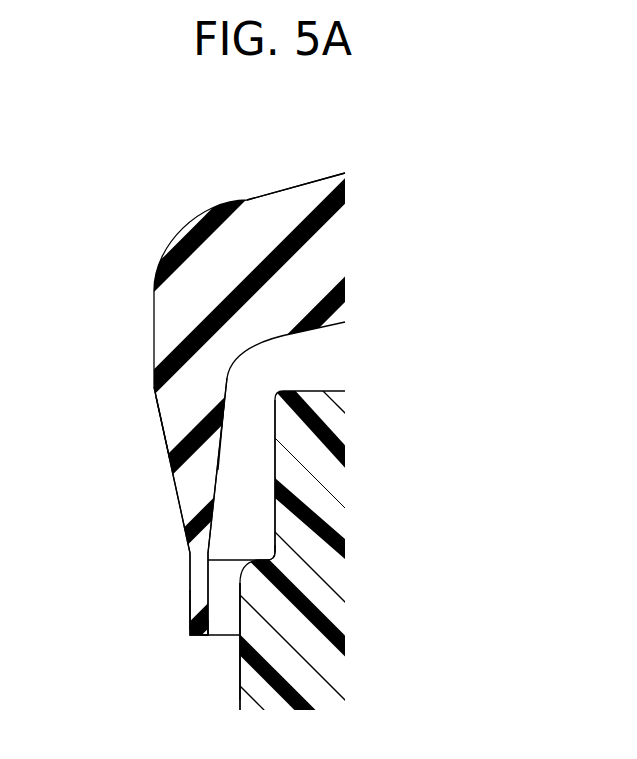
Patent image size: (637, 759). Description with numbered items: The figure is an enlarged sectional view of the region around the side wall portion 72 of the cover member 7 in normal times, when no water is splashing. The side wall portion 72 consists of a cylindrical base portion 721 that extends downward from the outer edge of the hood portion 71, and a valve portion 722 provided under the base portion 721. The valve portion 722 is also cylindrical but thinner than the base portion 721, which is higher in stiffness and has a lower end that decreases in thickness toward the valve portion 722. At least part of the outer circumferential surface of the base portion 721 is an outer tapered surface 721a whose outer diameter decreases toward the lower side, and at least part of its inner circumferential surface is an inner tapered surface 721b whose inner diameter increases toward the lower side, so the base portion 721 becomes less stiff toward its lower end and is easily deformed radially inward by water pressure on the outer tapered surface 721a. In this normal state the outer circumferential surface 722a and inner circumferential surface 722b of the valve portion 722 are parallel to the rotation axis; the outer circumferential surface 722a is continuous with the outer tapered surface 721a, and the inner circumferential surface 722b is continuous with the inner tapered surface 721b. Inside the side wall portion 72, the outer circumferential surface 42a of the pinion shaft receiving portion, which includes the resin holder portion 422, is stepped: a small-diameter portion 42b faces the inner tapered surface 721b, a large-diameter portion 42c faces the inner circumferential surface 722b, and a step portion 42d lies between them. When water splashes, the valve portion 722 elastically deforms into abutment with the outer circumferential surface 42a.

The cover member 7 is at (218, 199).
The hood portion 71 is at (313, 192).
The side wall portion 72 is at (118, 531).
The base portion 721 is at (193, 512).
The outer tapered surface 721a is at (162, 429).
The inner tapered surface 721b is at (221, 450).
The valve portion 722 is at (194, 596).
The outer circumferential surface 722a is at (189, 610).
The inner circumferential surface 722b is at (211, 633).
The outer circumferential surface 42a is at (411, 541).
The small-diameter portion 42b is at (275, 476).
The large-diameter portion 42c is at (241, 607).
The step portion 42d is at (261, 556).
The holder portion 422 is at (287, 697).